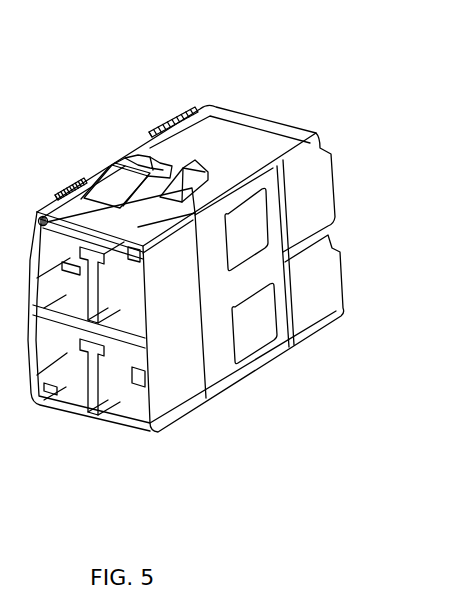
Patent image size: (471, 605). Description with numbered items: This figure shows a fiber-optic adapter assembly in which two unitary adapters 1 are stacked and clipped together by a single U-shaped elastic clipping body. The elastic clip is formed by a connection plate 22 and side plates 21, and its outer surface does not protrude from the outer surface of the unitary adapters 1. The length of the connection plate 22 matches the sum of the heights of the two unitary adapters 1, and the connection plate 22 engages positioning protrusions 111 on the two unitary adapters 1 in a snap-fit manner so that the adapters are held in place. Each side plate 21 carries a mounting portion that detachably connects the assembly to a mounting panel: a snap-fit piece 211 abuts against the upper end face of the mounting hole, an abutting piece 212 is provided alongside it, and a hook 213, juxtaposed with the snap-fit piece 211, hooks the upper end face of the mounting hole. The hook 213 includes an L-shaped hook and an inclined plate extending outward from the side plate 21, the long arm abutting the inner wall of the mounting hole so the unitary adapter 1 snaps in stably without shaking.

The unitary adapter 1 is at (325, 280).
The positioning protrusion 111 is at (255, 333).
The side plate 21 is at (262, 150).
The snap-fit piece 211 is at (143, 150).
The abutting piece 212 is at (113, 180).
The hook 213 is at (193, 165).
The connection plate 22 is at (215, 328).